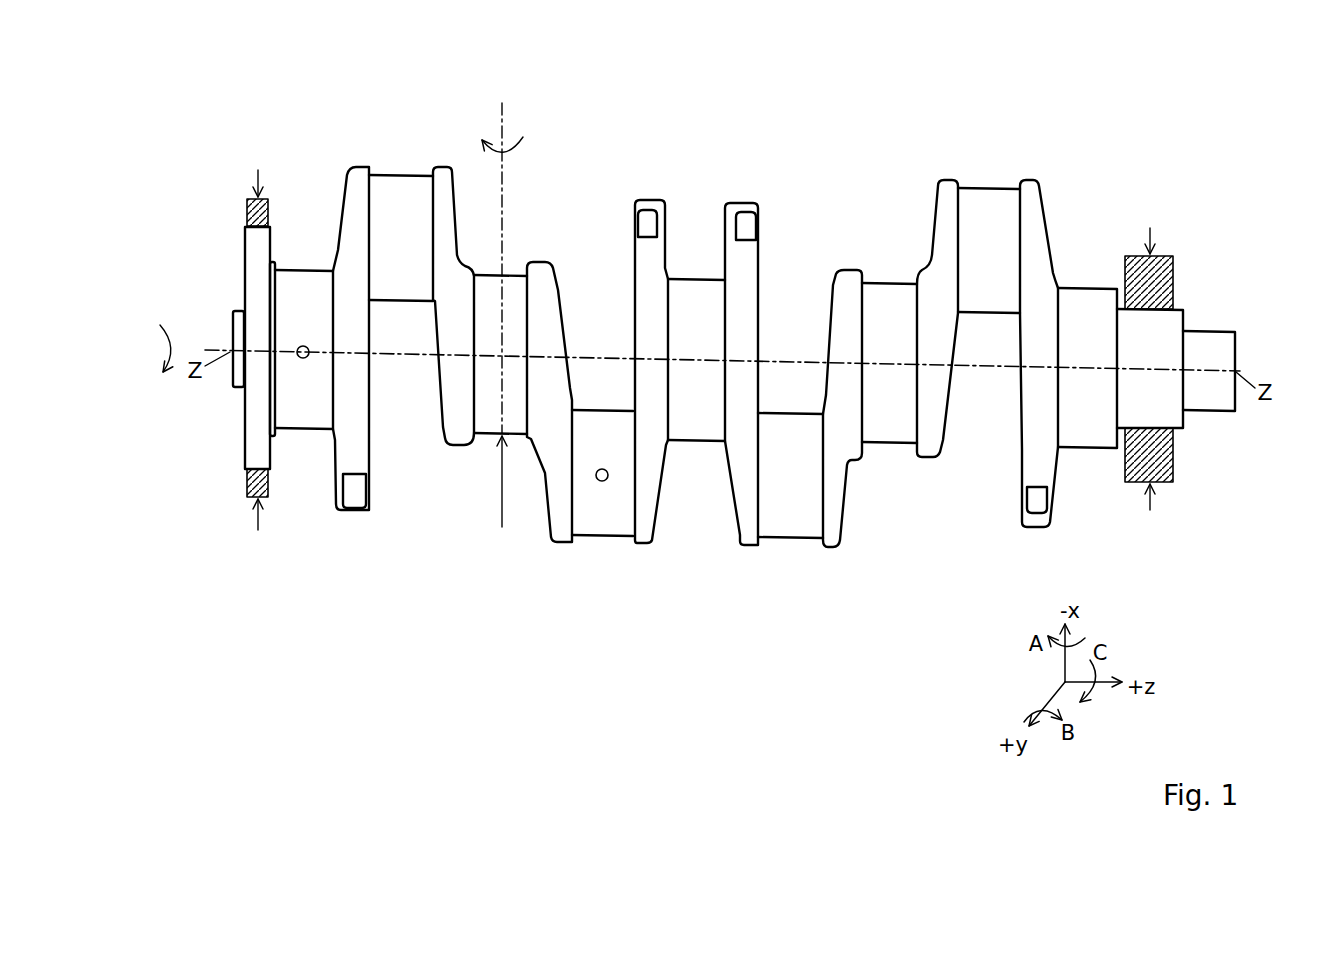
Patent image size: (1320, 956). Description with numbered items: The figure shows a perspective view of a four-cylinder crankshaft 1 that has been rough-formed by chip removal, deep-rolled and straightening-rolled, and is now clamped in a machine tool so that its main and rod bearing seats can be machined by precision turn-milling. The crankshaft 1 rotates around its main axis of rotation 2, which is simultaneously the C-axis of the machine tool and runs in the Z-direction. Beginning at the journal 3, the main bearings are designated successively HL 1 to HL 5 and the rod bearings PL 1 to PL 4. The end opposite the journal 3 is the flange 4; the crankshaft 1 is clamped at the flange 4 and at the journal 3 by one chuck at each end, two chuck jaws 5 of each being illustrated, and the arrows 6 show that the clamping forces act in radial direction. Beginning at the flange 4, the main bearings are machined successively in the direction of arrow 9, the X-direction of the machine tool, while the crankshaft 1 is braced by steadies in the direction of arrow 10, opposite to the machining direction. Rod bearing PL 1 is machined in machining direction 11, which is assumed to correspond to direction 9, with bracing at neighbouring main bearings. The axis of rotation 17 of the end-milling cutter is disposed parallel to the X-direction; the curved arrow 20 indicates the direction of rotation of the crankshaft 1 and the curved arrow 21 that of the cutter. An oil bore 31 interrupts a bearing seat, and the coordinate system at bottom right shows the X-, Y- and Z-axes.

The crankshaft 1 is at (1000, 187).
The main axis of rotation 2 is at (211, 349).
The journal 3 is at (1184, 320).
The flange 4 is at (244, 421).
The chuck jaws 5 is at (247, 213).
The arrows 6 is at (704, 351).
The arrow 9 is at (305, 269).
The arrow 10 is at (505, 498).
The machining direction 11 is at (990, 187).
The axis of rotation 17 is at (488, 257).
The curved arrow 20 is at (155, 348).
The curved arrow 21 is at (508, 133).
The oil bore 31 is at (305, 359).